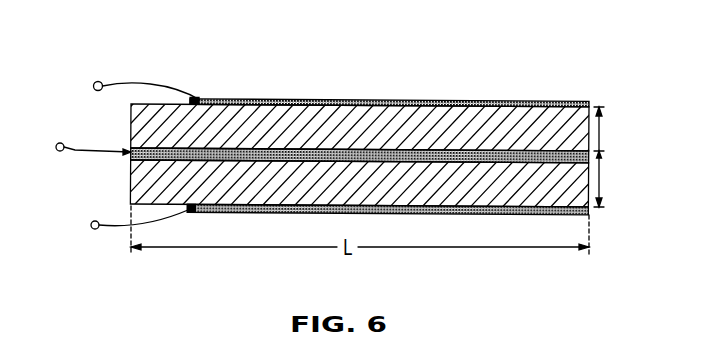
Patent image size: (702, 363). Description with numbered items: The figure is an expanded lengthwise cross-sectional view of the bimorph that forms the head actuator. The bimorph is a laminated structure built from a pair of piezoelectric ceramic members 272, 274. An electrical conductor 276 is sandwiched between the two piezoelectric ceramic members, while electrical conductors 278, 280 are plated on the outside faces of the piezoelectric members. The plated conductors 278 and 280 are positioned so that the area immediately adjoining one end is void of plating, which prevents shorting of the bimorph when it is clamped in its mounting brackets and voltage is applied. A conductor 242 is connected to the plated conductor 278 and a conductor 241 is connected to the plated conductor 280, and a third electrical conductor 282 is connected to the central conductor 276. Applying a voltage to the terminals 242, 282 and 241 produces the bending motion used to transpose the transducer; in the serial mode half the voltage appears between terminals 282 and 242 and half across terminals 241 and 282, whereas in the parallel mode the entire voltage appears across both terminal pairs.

The conductor 241 is at (121, 229).
The conductor 242 is at (173, 84).
The piezoelectric ceramic member 272 is at (131, 189).
The piezoelectric ceramic member 274 is at (131, 121).
The electrical conductor 276 is at (131, 158).
The electrical conductor 278 is at (570, 100).
The electrical conductor 280 is at (589, 208).
The third electrical conductor 282 is at (75, 150).